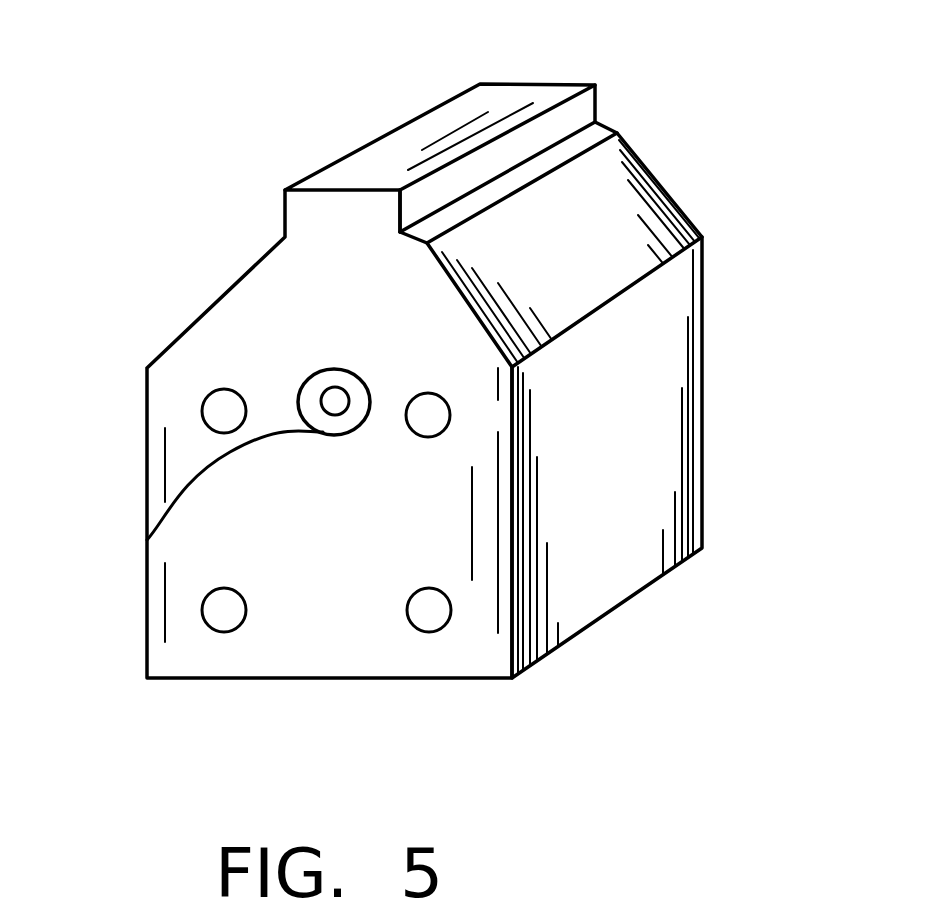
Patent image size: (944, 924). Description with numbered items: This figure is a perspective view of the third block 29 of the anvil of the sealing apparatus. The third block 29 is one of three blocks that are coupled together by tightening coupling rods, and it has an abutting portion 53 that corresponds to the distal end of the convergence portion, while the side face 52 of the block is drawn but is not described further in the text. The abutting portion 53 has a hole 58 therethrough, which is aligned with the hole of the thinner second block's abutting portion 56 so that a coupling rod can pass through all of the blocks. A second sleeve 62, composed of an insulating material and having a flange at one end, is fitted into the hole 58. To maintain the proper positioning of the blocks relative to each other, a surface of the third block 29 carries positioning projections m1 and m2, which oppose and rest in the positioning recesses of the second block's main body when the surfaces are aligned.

The third block 29 is at (680, 148).
The side face 52 is at (702, 380).
The abutting portion 53 is at (442, 123).
The abutting portion 56 is at (335, 647).
The hole 58 is at (320, 374).
The second sleeve 62 is at (147, 540).
The positioning projection m1 is at (203, 400).
The positioning projection m2 is at (450, 417).